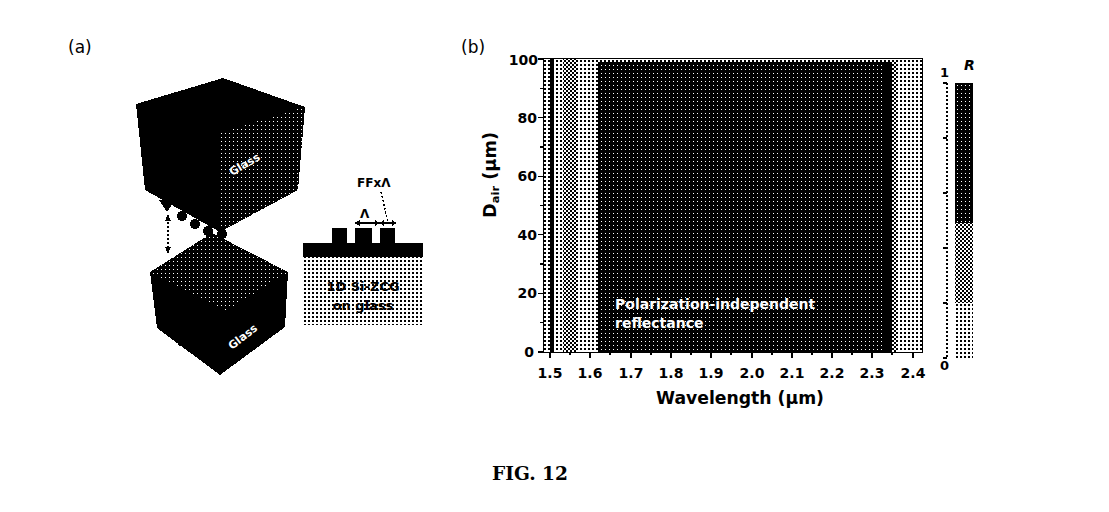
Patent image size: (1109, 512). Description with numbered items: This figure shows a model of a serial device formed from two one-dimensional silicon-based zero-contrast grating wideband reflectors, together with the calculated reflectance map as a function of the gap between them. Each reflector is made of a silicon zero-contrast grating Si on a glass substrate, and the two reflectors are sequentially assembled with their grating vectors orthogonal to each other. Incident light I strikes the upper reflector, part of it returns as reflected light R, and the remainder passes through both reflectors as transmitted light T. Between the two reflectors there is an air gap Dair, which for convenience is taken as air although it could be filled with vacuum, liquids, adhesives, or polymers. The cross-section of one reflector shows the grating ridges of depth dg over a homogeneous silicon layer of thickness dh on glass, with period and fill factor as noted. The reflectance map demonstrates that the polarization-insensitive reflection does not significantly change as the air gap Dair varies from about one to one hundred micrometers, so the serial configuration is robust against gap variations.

The incident light I is at (167, 181).
The reflected light R is at (202, 191).
The transmitted light T is at (180, 323).
The silicon zero-contrast grating Si is at (219, 272).
The air gap Dair is at (136, 238).
The homogeneous layer thickness dh is at (428, 243).
The grating depth dg is at (325, 228).